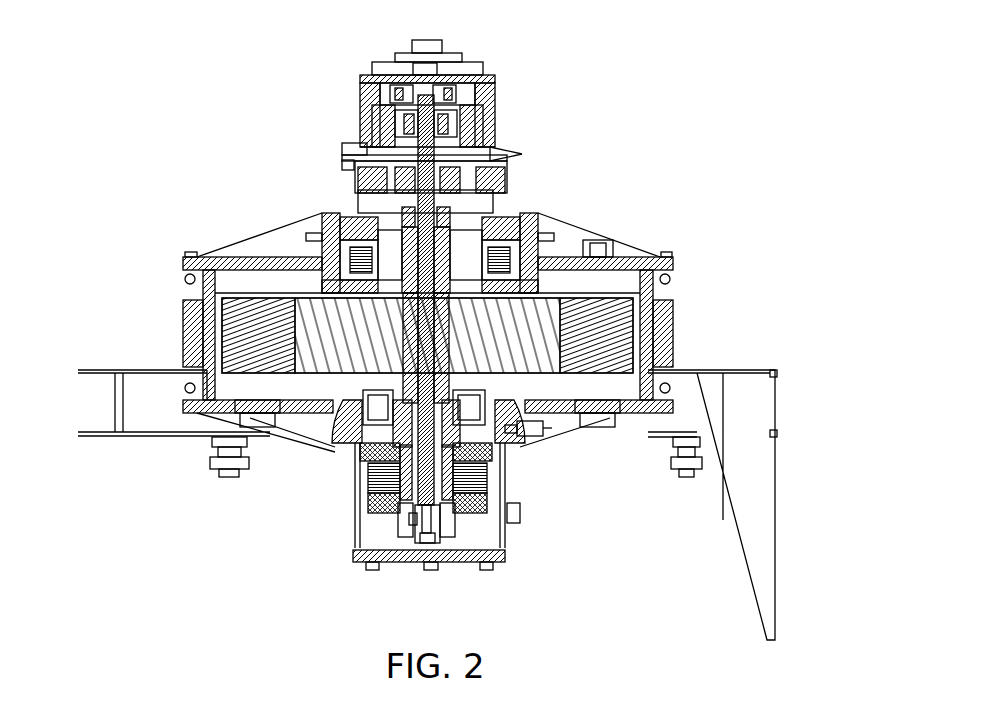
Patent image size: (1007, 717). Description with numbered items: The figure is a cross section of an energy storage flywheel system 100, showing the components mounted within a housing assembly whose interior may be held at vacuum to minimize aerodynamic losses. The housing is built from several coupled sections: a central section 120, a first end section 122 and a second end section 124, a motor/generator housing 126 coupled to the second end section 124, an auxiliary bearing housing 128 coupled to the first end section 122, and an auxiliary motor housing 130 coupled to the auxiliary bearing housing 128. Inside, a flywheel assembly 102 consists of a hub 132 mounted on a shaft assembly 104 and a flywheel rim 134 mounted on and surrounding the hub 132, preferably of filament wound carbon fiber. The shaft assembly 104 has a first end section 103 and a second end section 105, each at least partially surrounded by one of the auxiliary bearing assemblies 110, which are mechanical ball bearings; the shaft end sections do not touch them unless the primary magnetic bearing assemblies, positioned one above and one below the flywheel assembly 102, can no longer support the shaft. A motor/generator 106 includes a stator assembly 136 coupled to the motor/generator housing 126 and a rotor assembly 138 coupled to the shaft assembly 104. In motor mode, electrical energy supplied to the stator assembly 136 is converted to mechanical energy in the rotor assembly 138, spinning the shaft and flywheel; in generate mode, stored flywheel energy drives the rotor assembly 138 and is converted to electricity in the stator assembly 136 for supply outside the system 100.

The energy storage flywheel system 100 is at (262, 104).
The flywheel assembly 102 is at (243, 288).
The first end section 103 is at (437, 192).
The shaft assembly 104 is at (445, 196).
The second end section 105 is at (440, 545).
The motor/generator 106 is at (500, 486).
The auxiliary bearing assembly 110 is at (468, 158).
The central section 120 is at (675, 330).
The first end section 122 is at (540, 235).
The second end section 124 is at (272, 447).
The motor/generator housing 126 is at (357, 500).
The auxiliary bearing housing 128 is at (350, 160).
The auxiliary motor housing 130 is at (362, 100).
The hub 132 is at (300, 345).
The flywheel rim 134 is at (573, 298).
The stator assembly 136 is at (487, 520).
The rotor assembly 138 is at (458, 480).